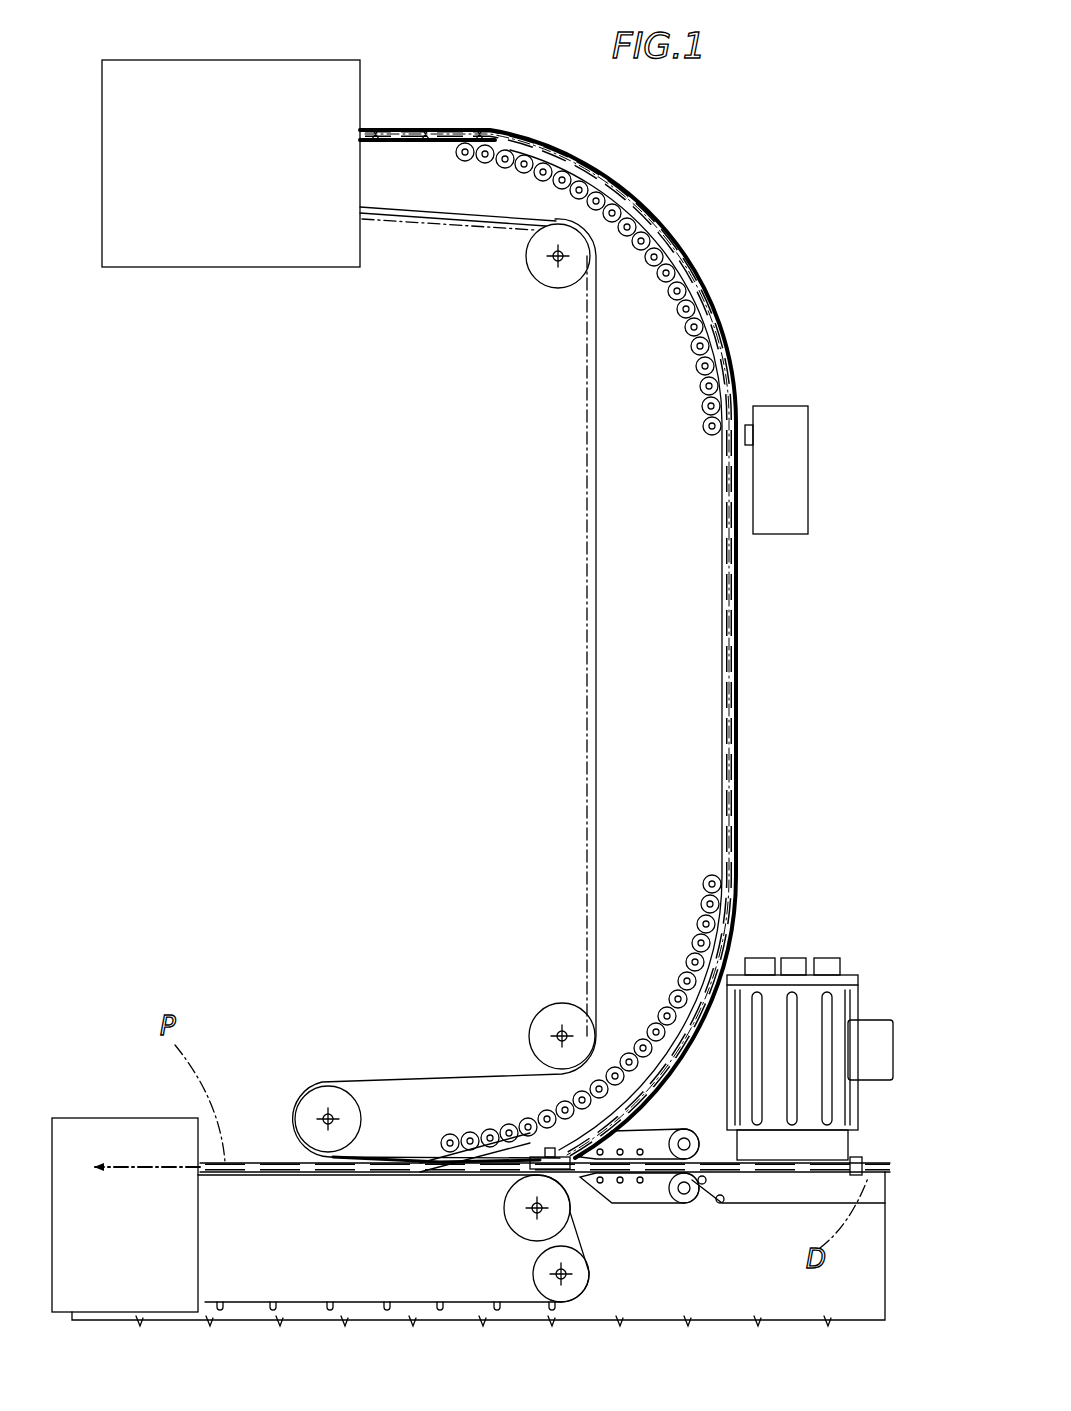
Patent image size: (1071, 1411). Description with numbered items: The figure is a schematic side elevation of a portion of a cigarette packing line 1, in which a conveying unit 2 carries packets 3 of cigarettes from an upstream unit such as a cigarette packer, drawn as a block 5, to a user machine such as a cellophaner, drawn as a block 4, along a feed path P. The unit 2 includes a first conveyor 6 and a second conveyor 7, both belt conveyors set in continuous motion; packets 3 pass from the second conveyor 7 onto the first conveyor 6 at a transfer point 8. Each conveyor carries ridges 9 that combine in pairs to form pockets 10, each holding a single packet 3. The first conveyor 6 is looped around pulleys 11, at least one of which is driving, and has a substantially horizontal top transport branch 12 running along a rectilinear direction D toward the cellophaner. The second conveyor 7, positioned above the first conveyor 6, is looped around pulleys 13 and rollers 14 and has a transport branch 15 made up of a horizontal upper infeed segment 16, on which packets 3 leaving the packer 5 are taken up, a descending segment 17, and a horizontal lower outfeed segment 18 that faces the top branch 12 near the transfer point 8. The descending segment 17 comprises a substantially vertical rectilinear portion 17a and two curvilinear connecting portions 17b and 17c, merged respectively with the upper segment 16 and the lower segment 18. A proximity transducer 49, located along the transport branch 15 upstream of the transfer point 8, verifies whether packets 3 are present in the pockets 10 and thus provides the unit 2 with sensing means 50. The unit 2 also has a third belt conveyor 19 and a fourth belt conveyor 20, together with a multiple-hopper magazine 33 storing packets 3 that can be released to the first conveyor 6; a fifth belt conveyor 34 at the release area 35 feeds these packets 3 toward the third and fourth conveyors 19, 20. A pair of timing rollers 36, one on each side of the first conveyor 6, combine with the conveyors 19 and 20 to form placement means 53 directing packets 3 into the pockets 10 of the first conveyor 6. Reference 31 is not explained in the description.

The cigarette packing line 1 is at (128, 48).
The conveying unit 2 is at (742, 183).
The packets 3 is at (398, 126).
The user machine 4 is at (140, 1242).
The upstream unit 5 is at (232, 171).
The first conveyor 6 is at (410, 1300).
The second conveyor 7 is at (430, 228).
The transfer point 8 is at (458, 1133).
The ridges 9 is at (370, 128).
The pockets 10 is at (562, 158).
The pulleys 11 is at (506, 1208).
The top transport branch 12 is at (278, 1180).
The pulleys 13 is at (538, 263).
The rollers 14 is at (538, 182).
The transport branch 15 is at (720, 491).
The upper infeed segment 16 is at (393, 143).
The descending segment 17 is at (720, 627).
The vertical rectilinear portion 17a is at (720, 655).
The curvilinear connecting portion 17b is at (640, 240).
The curvilinear connecting portion 17c is at (660, 1043).
The lower outfeed segment 18 is at (400, 1147).
The third belt conveyor 19 is at (690, 1205).
The fourth belt conveyor 20 is at (696, 1128).
The upper roller arm 31 is at (598, 1150).
The magazine 33 is at (802, 994).
The fifth belt conveyor 34 is at (884, 1248).
The area 35 is at (830, 1160).
The timing rollers 36 is at (540, 1130).
The proximity transducer 49 is at (797, 482).
The sensing means 50 is at (812, 517).
The placement means 53 is at (572, 1150).